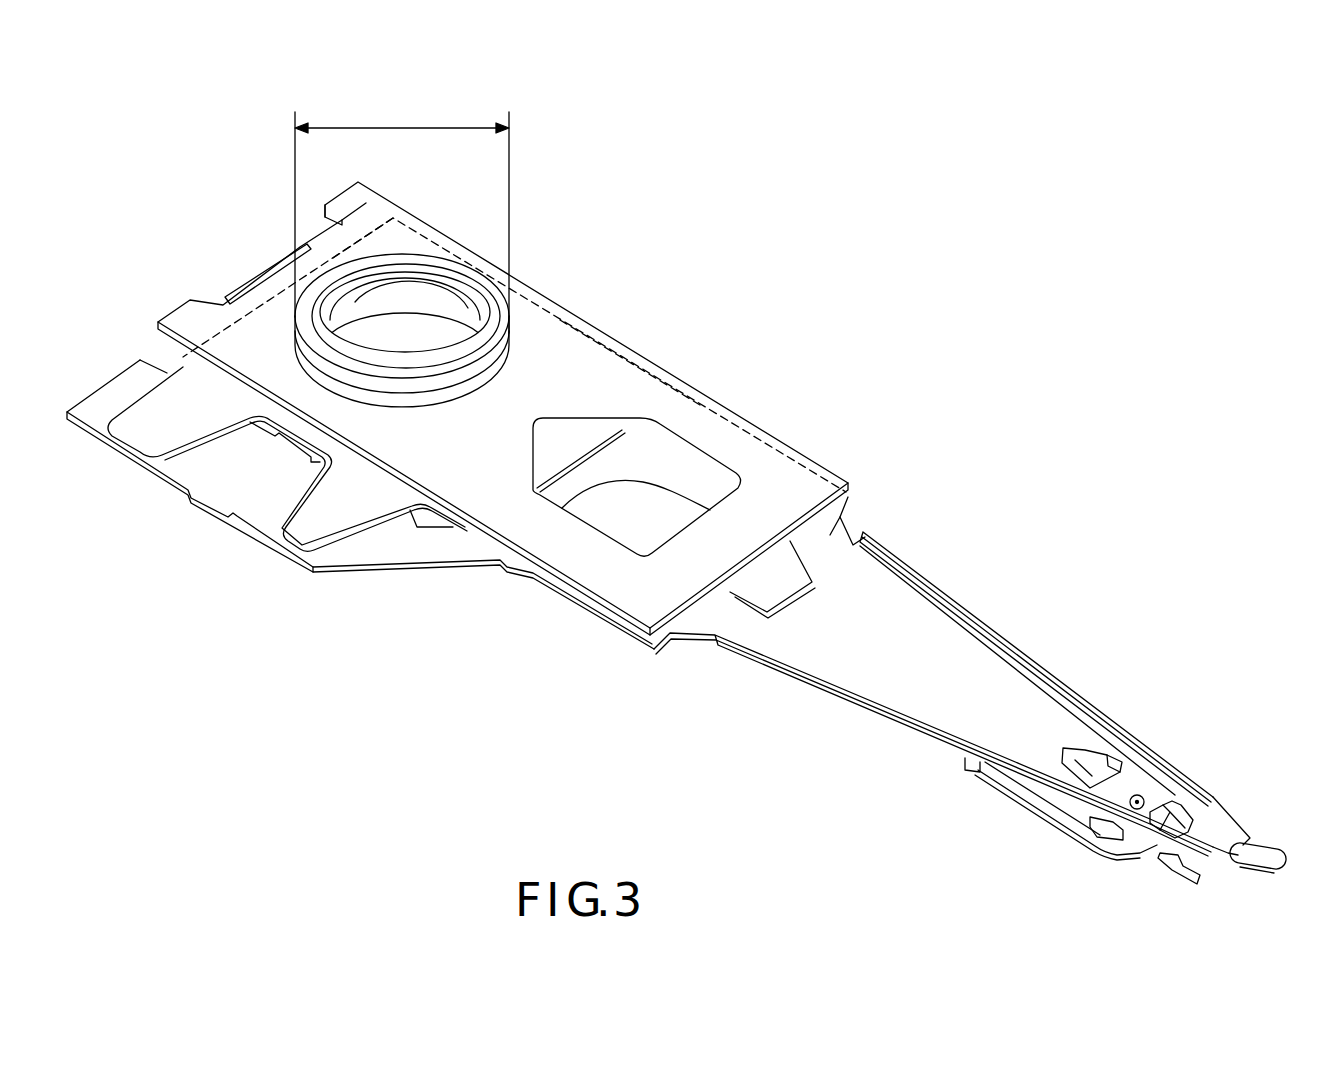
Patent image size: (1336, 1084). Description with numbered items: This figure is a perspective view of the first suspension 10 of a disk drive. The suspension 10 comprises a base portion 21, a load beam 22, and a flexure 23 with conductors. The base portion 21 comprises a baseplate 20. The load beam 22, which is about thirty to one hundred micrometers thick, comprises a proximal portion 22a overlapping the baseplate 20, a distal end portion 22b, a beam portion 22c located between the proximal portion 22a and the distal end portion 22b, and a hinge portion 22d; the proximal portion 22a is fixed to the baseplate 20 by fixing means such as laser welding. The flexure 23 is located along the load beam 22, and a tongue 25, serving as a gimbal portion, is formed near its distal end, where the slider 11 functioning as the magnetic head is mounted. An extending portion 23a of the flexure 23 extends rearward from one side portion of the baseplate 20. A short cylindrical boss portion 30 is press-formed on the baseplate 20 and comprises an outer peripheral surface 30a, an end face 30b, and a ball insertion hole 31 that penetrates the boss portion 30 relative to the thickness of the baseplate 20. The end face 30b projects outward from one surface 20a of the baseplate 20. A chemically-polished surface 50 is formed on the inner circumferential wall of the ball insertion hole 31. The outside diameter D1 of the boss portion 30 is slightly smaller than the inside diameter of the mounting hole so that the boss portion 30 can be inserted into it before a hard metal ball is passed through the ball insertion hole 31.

The first suspension 10 is at (866, 285).
The slider 11 is at (1107, 823).
The baseplate 20 is at (643, 383).
The one surface of the baseplate 20a is at (525, 322).
The base portion 21 is at (467, 530).
The load beam 22 is at (997, 633).
The proximal portion 22a is at (577, 350).
The distal end portion 22b is at (1270, 847).
The beam portion 22c is at (877, 597).
The hinge portion 22d is at (843, 520).
The flexure 23 is at (1070, 840).
The extending portion 23a is at (257, 515).
The tongue 25 is at (1180, 807).
The boss portion 30 is at (407, 257).
The outer peripheral surface 30a is at (430, 398).
The end face 30b is at (470, 347).
The ball insertion hole 31 is at (405, 332).
The chemically-polished surface 50 is at (450, 293).
The outside diameter of the boss portion D1 is at (395, 128).